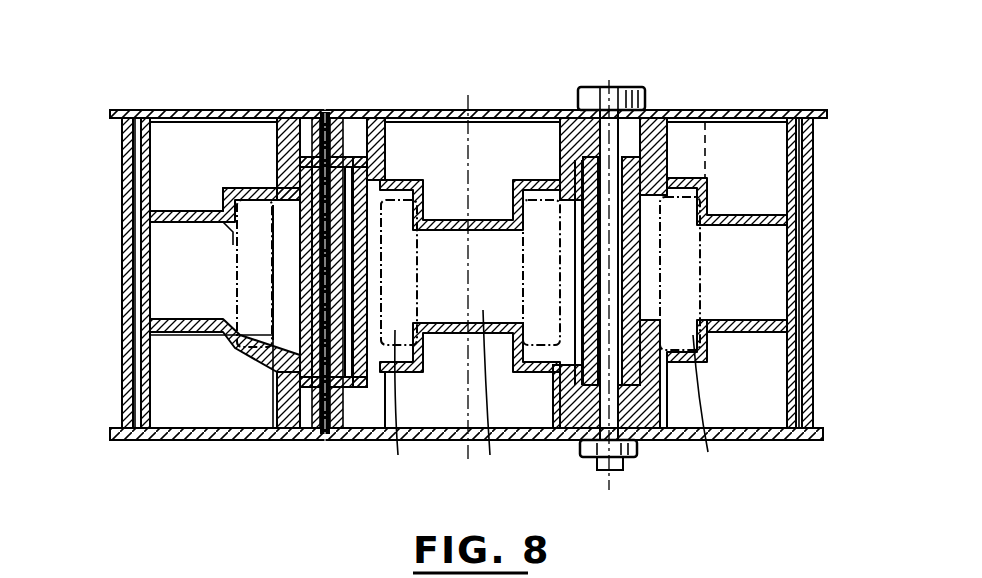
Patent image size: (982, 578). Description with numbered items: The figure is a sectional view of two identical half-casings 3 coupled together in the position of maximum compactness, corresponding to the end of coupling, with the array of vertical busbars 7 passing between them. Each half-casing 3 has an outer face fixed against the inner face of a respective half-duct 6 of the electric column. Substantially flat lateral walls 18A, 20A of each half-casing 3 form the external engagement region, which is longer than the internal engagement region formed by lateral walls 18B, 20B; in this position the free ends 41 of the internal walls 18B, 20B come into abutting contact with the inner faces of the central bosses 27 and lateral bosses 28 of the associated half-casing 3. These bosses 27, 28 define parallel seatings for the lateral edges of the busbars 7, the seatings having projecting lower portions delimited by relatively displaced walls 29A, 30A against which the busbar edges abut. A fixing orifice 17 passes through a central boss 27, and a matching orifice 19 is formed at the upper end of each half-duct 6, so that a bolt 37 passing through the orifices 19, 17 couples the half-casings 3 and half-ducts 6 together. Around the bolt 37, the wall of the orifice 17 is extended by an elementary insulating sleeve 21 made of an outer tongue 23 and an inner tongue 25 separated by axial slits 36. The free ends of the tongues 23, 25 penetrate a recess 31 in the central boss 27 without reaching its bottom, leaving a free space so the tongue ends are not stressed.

The half-casing 3 is at (106, 118).
The half-duct 6 is at (410, 110).
The busbar 7 is at (490, 190).
The fixing orifice 17 is at (312, 110).
The lateral wall 18A is at (213, 390).
The lateral wall 18B is at (768, 288).
The fixing orifice 19 is at (336, 110).
The lateral wall 20A is at (120, 393).
The lateral wall 20B is at (805, 265).
The elementary insulating sleeve 21 is at (558, 257).
The outer tongue 23 is at (257, 273).
The inner tongue 25 is at (381, 248).
The central boss 27 is at (574, 399).
The lateral boss 28 is at (753, 317).
The displaced wall 29A is at (397, 187).
The displaced wall 30A is at (250, 192).
The recess 31 is at (345, 140).
The axial slit 36 is at (385, 310).
The bolt 37 is at (640, 80).
The free end 41 is at (150, 135).